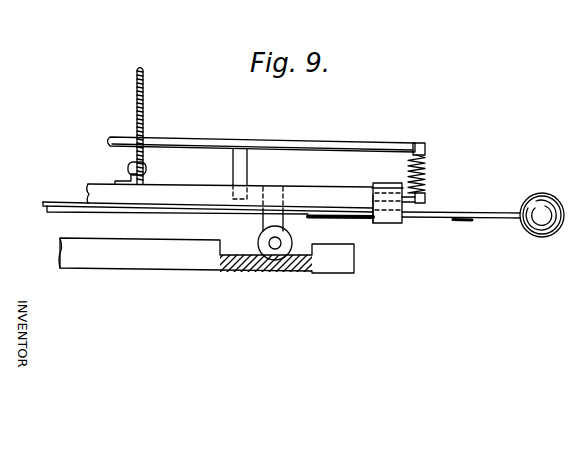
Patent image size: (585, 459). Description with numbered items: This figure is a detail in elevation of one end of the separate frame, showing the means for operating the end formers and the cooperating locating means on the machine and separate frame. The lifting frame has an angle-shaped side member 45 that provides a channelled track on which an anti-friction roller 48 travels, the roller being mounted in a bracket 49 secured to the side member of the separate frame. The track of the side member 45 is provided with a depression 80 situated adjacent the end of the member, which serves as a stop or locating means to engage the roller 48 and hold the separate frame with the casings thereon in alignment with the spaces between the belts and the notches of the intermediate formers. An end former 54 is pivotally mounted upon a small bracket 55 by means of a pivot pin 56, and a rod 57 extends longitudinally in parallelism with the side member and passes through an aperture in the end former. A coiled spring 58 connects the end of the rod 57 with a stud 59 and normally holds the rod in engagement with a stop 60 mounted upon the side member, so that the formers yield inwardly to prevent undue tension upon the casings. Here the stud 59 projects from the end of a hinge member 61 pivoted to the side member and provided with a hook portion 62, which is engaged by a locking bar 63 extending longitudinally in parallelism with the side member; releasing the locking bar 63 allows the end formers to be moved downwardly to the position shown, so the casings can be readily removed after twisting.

The side member 45 is at (160, 258).
The anti-friction roller 48 is at (291, 268).
The bracket 49 is at (273, 218).
The end former 54 is at (145, 90).
The small bracket 55 is at (120, 181).
The pivot pin 56 is at (147, 169).
The rod 57 is at (335, 143).
The coiled spring 58 is at (423, 165).
The stud 59 is at (423, 199).
The stop 60 is at (240, 167).
The hinge member 61 is at (374, 197).
The hook portion 62 is at (390, 222).
The locking bar 63 is at (57, 205).
The depression 80 is at (277, 266).